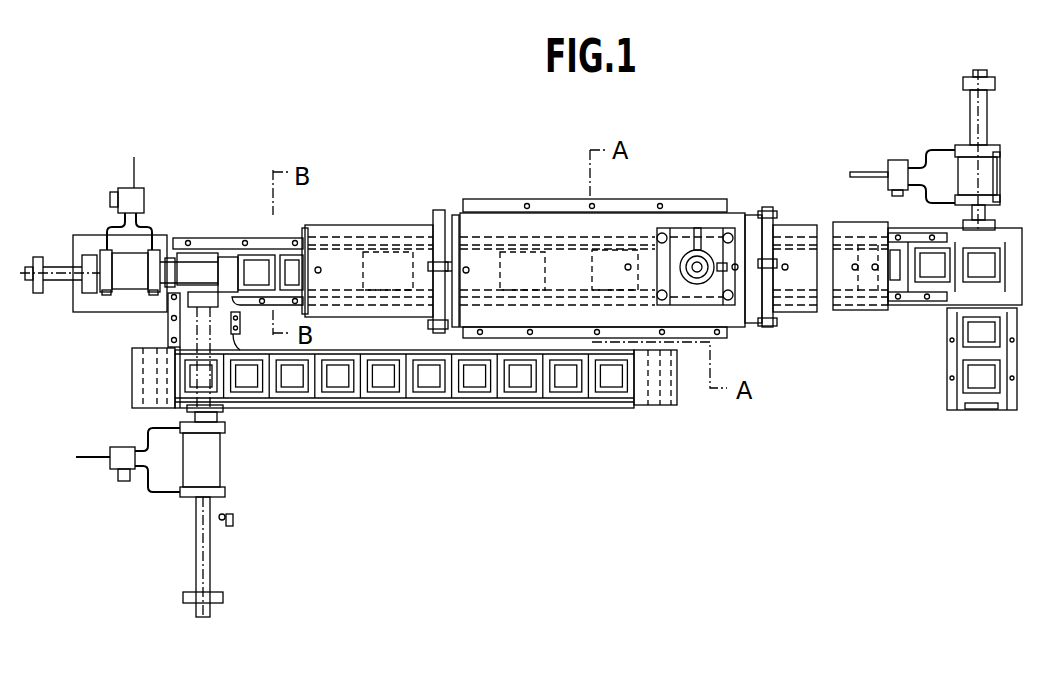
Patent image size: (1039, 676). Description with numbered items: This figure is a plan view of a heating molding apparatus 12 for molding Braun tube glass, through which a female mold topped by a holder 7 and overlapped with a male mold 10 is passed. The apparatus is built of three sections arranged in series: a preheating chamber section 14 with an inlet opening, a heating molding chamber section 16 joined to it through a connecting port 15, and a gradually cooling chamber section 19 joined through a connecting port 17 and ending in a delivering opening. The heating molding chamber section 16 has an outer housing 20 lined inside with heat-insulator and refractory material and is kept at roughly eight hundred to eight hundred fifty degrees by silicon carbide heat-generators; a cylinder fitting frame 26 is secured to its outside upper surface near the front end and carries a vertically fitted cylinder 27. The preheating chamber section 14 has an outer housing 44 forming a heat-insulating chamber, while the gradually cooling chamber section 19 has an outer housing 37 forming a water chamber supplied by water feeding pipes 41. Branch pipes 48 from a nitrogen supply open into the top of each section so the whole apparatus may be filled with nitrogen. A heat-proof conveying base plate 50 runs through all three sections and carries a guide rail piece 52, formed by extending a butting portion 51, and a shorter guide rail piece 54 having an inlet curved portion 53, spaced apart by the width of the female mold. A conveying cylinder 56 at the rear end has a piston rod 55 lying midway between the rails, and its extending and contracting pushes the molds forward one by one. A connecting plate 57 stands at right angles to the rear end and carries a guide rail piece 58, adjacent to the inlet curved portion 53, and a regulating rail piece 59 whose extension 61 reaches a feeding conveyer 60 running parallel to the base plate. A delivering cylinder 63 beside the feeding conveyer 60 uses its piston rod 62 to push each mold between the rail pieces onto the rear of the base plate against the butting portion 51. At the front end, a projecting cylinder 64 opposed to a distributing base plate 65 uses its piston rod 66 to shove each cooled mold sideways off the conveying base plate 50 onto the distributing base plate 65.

The holder 7 is at (475, 378).
The male mold 10 is at (475, 380).
The heating molding apparatus 12 is at (508, 222).
The preheating chamber section 14 is at (373, 233).
The connecting port 15 is at (448, 240).
The heating molding chamber section 16 is at (537, 222).
The connecting port 17 is at (750, 255).
The gradually cooling chamber section 19 is at (800, 225).
The outer housing 20 is at (568, 222).
The cylinder fitting frame 26 is at (677, 227).
The cylinder 27 is at (697, 250).
The outer housing 37 is at (840, 222).
The water feeding pipes 41 is at (786, 271).
The outer housing 44 is at (405, 237).
The branch pipes 48 is at (318, 266).
The conveying base plate 50 is at (205, 256).
The butting portion 51 is at (190, 262).
The guide rail piece 52 is at (263, 240).
The inlet curved portion 53 is at (228, 262).
The guide rail piece 54 is at (274, 302).
The piston rod 55 is at (185, 270).
The conveying cylinder 56 is at (118, 258).
The connecting plate 57 is at (166, 320).
The guide rail piece 58 is at (237, 322).
The regulating rail piece 59 is at (168, 336).
The feeding conveyer 60 is at (380, 405).
The extension 61 is at (183, 380).
The piston rod 62 is at (218, 432).
The delivering cylinder 63 is at (185, 470).
The projecting cylinder 64 is at (998, 172).
The distributing base plate 65 is at (947, 325).
The piston rod 66 is at (985, 225).